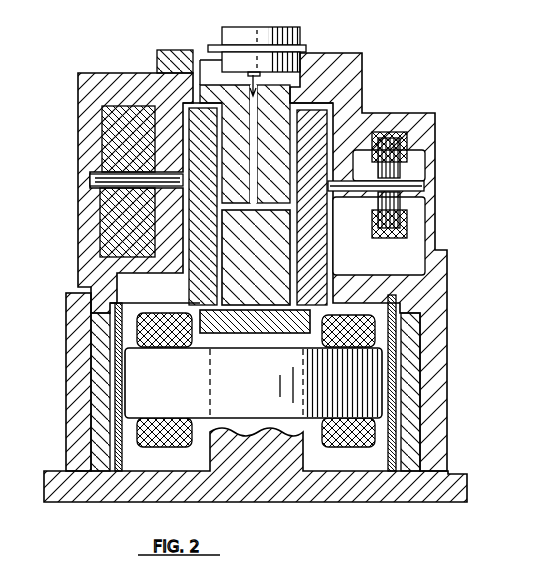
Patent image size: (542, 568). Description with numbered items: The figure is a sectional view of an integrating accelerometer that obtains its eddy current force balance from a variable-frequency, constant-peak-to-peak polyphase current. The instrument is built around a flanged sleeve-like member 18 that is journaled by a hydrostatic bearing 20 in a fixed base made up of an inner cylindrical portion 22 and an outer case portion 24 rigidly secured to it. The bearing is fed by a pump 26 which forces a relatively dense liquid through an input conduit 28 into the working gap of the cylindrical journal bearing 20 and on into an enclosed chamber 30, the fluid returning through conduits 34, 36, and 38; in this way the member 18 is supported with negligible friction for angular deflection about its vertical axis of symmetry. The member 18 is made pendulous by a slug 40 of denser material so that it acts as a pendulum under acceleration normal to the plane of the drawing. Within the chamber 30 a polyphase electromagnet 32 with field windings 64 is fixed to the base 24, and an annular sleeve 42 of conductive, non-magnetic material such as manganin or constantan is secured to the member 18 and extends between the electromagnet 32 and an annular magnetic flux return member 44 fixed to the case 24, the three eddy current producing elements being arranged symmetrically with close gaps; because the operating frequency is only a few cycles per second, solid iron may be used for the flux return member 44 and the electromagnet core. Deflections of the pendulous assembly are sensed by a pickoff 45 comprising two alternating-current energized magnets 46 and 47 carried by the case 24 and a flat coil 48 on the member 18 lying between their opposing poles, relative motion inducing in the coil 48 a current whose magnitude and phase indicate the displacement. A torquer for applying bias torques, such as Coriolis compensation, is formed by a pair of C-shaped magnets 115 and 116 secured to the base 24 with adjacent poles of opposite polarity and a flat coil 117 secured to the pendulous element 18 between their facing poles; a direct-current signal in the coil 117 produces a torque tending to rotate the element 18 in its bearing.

The flanged sleeve-like member 18 is at (217, 246).
The hydrostatic bearing 20 is at (289, 135).
The inner cylindrical portion 22 is at (268, 258).
The outer case portion 24 is at (82, 297).
The pump 26 is at (268, 27).
The input conduit 28 is at (253, 113).
The enclosed chamber 30 is at (172, 456).
The polyphase electromagnet 32 is at (263, 388).
The conduit 34 is at (186, 240).
The conduit 36 is at (192, 155).
The conduit 38 is at (197, 53).
The slug 40 is at (362, 289).
The annular sleeve 42 is at (396, 305).
The annular magnetic flux return member 44 is at (413, 463).
The pickoff 45 is at (420, 129).
The alternating current energized magnet 46 is at (390, 127).
The alternating current energized magnet 47 is at (404, 215).
The flat coil 48 is at (423, 180).
The field windings 64 is at (174, 337).
The C-shaped magnet 115 is at (115, 125).
The C-shaped magnet 116 is at (110, 228).
The flat coil 117 is at (92, 183).